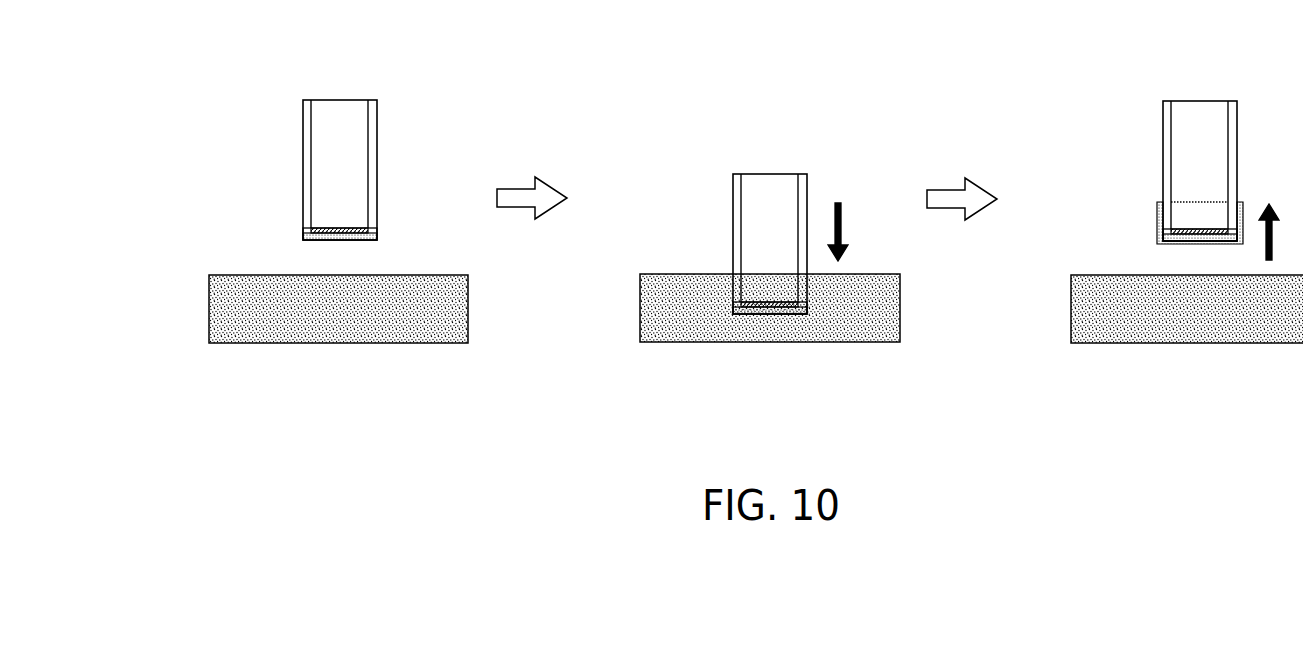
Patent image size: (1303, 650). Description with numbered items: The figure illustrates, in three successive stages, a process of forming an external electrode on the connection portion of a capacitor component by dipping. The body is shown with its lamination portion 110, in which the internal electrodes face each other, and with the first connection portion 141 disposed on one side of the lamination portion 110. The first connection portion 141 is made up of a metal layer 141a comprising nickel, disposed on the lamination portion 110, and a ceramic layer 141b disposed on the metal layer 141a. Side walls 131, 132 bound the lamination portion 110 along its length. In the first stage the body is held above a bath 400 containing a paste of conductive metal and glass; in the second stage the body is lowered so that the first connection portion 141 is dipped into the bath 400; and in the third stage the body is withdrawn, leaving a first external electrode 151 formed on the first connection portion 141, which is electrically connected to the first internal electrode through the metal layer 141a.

The lamination portion 110 is at (341, 112).
The first side wall layer 131 is at (372, 120).
The second side wall layer 132 is at (306, 120).
The first connection portion 141 is at (193, 212).
The metal layer 141a is at (304, 231).
The ceramic layer 141b is at (304, 237).
The first external electrode 151 is at (1158, 212).
The substrate / plating bath 400 is at (216, 308).